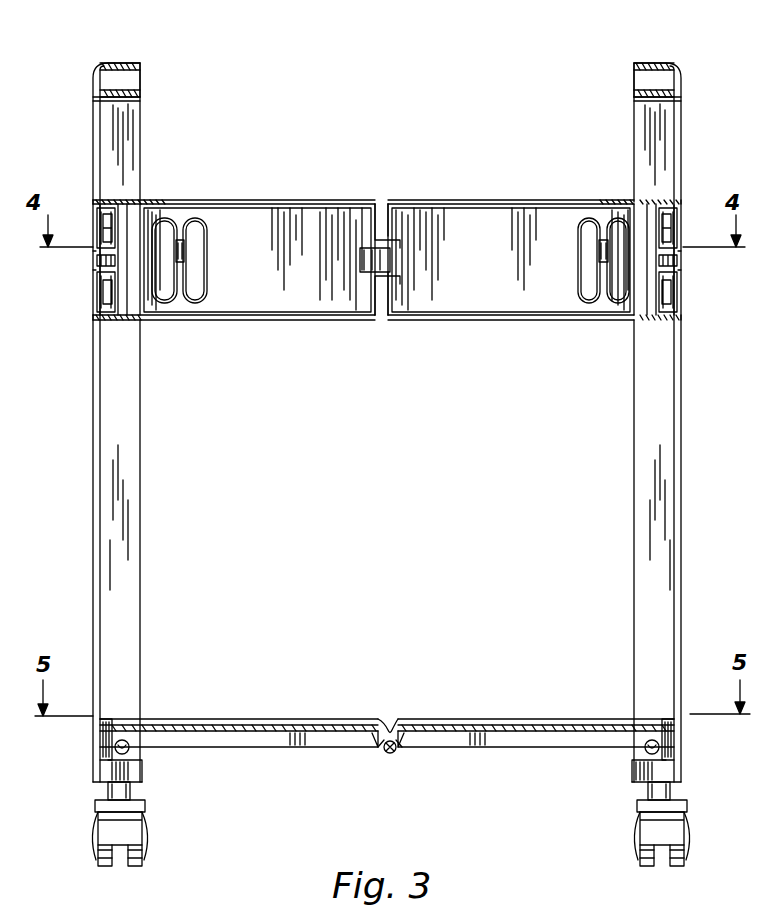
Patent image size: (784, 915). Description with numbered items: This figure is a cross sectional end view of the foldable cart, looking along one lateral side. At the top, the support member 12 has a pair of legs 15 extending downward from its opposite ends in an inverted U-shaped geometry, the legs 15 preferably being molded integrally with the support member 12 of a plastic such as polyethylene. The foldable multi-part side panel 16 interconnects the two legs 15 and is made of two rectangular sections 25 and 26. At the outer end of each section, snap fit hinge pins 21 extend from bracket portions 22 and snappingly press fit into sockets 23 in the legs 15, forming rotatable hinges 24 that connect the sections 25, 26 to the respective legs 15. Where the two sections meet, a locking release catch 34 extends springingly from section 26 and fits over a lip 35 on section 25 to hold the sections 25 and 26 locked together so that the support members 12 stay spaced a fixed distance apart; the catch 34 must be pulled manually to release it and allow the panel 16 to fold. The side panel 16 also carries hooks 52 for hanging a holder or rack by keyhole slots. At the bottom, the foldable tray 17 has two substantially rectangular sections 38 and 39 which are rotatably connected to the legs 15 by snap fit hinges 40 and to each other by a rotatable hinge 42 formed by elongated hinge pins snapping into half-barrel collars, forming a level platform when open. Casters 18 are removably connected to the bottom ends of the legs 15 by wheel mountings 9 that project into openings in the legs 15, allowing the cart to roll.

The support member 12 is at (113, 60).
The leg 15 is at (103, 476).
The side panel 16 is at (398, 198).
The tray 17 is at (378, 693).
The caster 18 is at (92, 856).
The wheel mounting 9 is at (106, 786).
The snap fit hinge pin 21 is at (102, 216).
The bracket portion 22 is at (98, 262).
The socket 23 is at (108, 238).
The rotatable hinge 24 is at (94, 284).
The section 25 is at (246, 303).
The section 26 is at (494, 303).
The locking release catch 34 is at (360, 250).
The lip 35 is at (380, 243).
The section 38 is at (258, 717).
The section 39 is at (506, 717).
The rotatable snap fit hinge 40 is at (132, 748).
The rotatable hinge 42 is at (382, 756).
The hook 52 is at (180, 240).